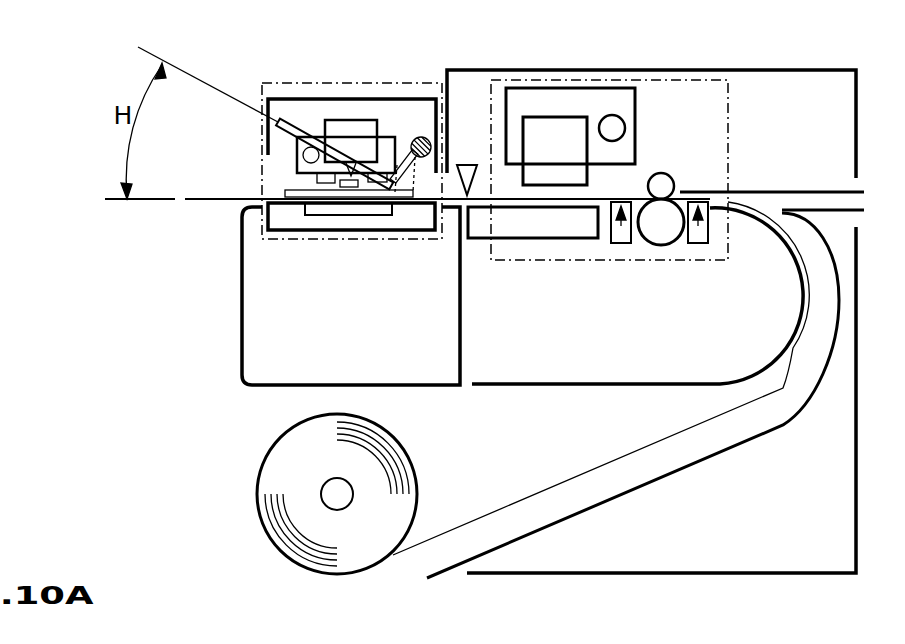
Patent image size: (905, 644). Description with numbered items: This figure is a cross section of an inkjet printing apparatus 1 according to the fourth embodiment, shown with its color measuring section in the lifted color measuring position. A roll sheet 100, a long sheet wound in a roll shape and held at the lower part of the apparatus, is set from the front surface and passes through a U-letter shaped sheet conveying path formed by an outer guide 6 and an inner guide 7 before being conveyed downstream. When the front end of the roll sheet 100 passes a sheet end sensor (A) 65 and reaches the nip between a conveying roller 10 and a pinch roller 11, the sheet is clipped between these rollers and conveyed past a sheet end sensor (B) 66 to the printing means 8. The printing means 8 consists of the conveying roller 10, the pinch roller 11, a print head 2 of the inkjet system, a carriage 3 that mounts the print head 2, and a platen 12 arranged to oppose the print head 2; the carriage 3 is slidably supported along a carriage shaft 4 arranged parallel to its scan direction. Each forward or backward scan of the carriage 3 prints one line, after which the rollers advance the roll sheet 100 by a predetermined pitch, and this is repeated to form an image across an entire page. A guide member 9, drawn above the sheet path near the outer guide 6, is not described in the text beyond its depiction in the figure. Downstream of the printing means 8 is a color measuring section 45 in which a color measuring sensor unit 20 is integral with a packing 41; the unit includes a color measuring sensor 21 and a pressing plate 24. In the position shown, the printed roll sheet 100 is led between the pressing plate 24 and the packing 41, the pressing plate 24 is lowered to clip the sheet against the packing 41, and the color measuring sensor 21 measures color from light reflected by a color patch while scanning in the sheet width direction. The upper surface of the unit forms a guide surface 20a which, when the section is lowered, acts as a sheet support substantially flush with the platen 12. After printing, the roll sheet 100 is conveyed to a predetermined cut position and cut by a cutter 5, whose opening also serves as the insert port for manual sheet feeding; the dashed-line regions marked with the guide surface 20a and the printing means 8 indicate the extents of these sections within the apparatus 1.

The inkjet printing apparatus 1 is at (753, 572).
The print head 2 is at (557, 132).
The carriage 3 is at (540, 100).
The carriage shaft 4 is at (613, 126).
The cutter 5 is at (467, 163).
The outer guide 6 is at (822, 383).
The inner guide 7 is at (792, 348).
The printing means 8 is at (519, 262).
The discharge guide 9 is at (778, 190).
The conveying roller 10 is at (660, 240).
The pinch roller 11 is at (662, 174).
The platen 12 is at (567, 225).
The color measuring sensor unit 20 is at (267, 108).
The guide surface 20a is at (300, 98).
The color measuring sensor 21 is at (352, 127).
The pressing plate 24 is at (292, 135).
The packing 41 is at (350, 216).
The color measuring section 45 is at (293, 243).
The sheet end sensor (A) 65 is at (698, 245).
The sheet end sensor (B) 66 is at (620, 245).
The roll sheet 100 is at (277, 545).